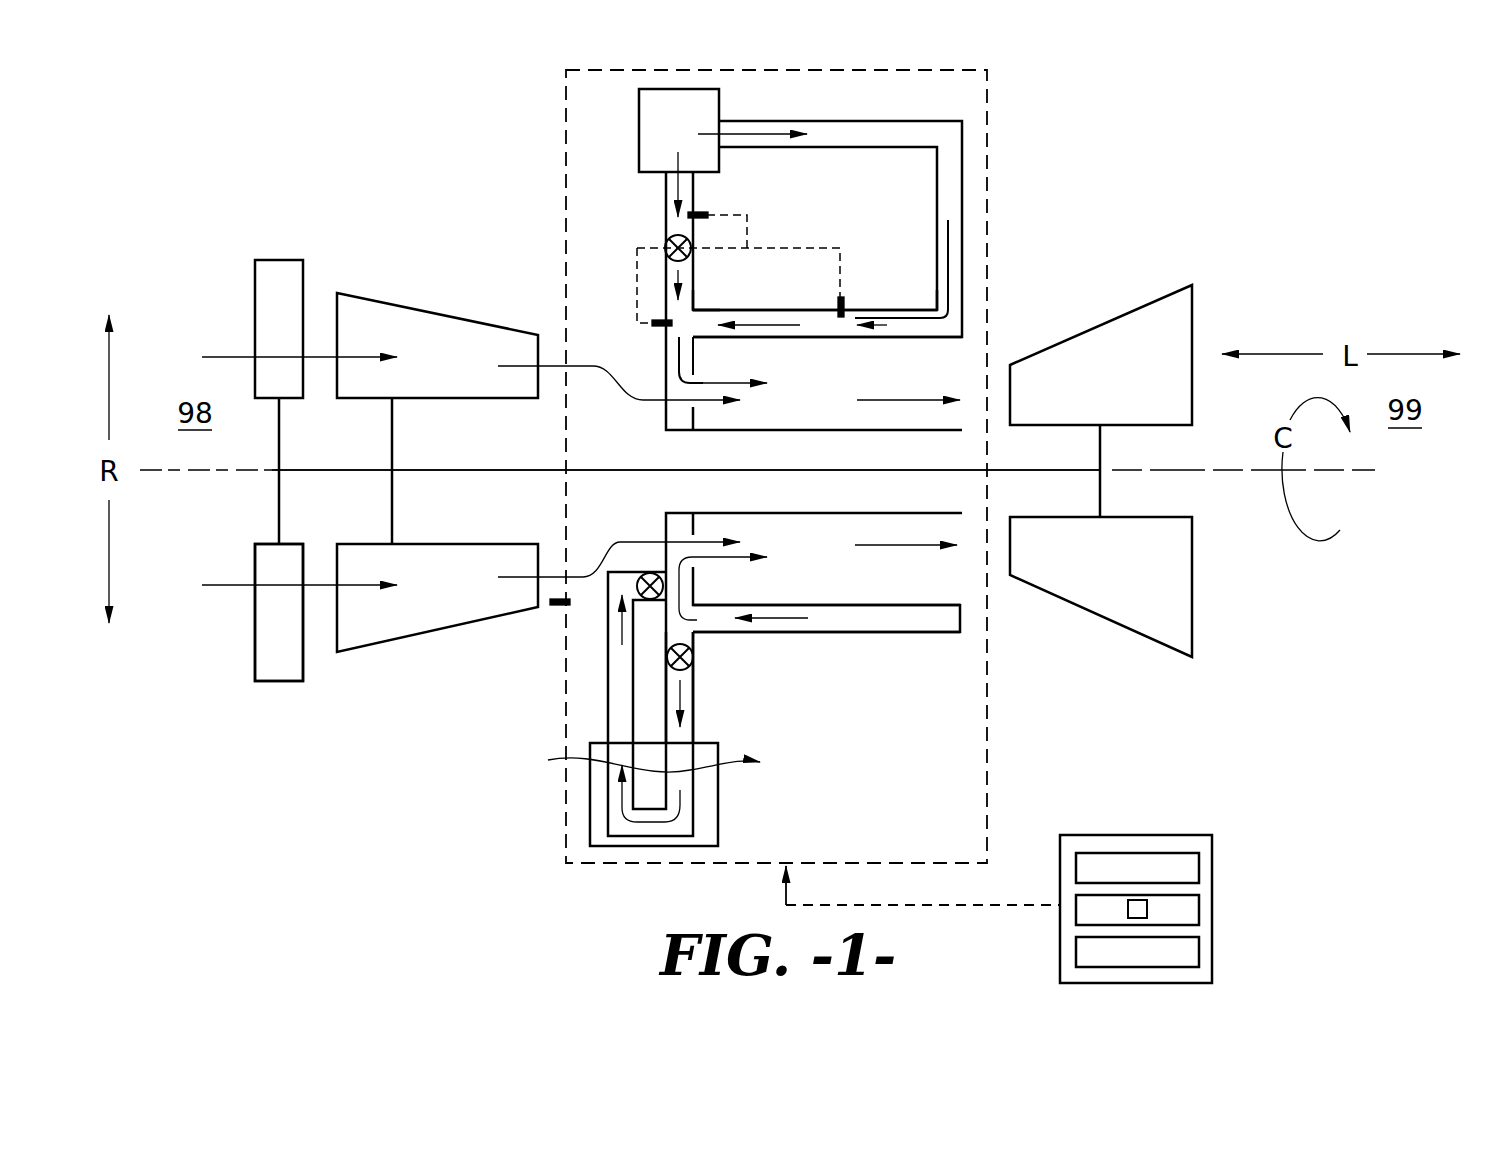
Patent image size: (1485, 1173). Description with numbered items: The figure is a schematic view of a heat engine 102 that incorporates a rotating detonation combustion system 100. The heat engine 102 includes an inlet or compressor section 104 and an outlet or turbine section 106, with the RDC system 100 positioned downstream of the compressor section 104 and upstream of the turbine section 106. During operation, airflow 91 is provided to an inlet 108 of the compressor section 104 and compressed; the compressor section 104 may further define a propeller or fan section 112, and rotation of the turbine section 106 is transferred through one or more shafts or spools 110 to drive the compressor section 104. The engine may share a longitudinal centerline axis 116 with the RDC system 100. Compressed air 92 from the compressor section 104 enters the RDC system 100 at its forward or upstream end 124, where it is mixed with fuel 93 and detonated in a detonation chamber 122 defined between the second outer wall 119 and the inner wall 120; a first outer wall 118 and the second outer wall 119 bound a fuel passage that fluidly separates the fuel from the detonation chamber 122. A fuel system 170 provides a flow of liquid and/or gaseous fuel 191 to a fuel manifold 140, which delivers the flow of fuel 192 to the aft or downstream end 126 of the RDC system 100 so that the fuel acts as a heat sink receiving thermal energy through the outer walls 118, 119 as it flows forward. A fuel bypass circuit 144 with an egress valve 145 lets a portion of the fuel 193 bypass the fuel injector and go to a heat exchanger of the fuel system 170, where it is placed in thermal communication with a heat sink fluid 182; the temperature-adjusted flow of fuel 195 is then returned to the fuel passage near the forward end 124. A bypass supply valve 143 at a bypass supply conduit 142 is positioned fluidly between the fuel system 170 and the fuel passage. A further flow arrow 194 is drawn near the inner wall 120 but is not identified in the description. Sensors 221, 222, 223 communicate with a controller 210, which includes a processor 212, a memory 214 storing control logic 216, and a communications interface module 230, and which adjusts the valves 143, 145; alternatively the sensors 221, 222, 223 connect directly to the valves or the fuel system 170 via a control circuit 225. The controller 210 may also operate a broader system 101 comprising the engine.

The airflow 91 is at (228, 356).
The compressed air 92 is at (640, 400).
The fuel 93 is at (710, 383).
The rotating detonation combustion system 100 is at (820, 688).
The system 101 is at (987, 763).
The heat engine 102 is at (1156, 109).
The compressor section 104 is at (405, 300).
The turbine section 106 is at (1123, 315).
The inlet 108 is at (243, 624).
The shafts or spools 110 is at (437, 470).
The fan section 112 is at (283, 250).
The longitudinal centerline axis 116 is at (218, 472).
The first outer wall 118 is at (757, 310).
The second outer wall 119 is at (905, 340).
The inner wall 120 is at (765, 432).
The detonation chamber 122 is at (788, 419).
The forward or upstream end 124 is at (705, 308).
The aft or downstream end 126 is at (928, 302).
The fuel manifold 140 is at (965, 178).
The bypass supply conduit 142 is at (694, 188).
The bypass supply valve 143 is at (668, 240).
The fuel bypass circuit 144 is at (693, 682).
The egress valve 145 is at (693, 652).
The fuel system 170 is at (638, 142).
The heat sink fluid 182 is at (548, 760).
The flow of fuel 191 is at (749, 132).
The first flow of fuel 192 is at (948, 255).
The bypassed flow of fuel 193 is at (693, 712).
The recirculated flow 194 is at (697, 590).
The temperature-adjusted flow of fuel 195 is at (666, 188).
The controller 210 is at (1147, 835).
The processor 212 is at (1200, 865).
The memory 214 is at (1200, 910).
The control logic 216 is at (1130, 906).
The sensor 221 is at (843, 320).
The sensor 222 is at (652, 328).
The sensor 223 is at (710, 215).
The control circuit 225 is at (805, 247).
The communications interface module 230 is at (1200, 955).